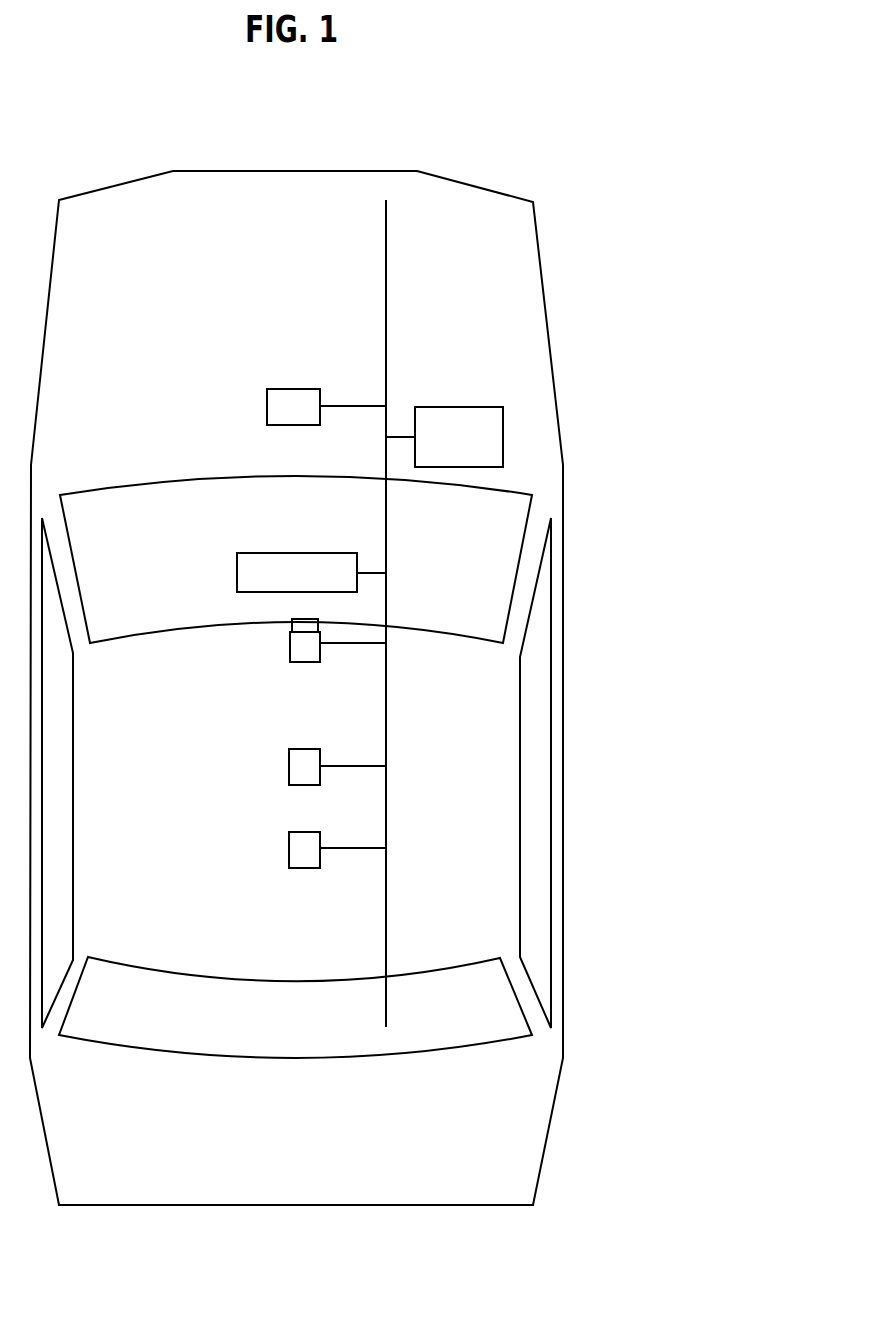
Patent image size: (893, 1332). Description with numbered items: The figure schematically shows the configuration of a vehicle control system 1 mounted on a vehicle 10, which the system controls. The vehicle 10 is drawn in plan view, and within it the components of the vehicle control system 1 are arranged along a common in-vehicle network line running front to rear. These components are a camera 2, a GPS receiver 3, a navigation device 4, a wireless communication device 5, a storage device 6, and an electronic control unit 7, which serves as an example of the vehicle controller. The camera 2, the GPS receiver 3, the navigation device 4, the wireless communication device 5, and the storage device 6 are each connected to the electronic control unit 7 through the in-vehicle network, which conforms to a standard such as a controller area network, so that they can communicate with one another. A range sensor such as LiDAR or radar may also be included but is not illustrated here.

The vehicle control system 1 is at (648, 1183).
The vehicle 10 is at (563, 975).
The camera 2 is at (290, 652).
The GPS receiver 3 is at (289, 764).
The navigation device 4 is at (237, 570).
The wireless communication device 5 is at (289, 847).
The storage device 6 is at (267, 404).
The electronic control unit 7 is at (503, 423).